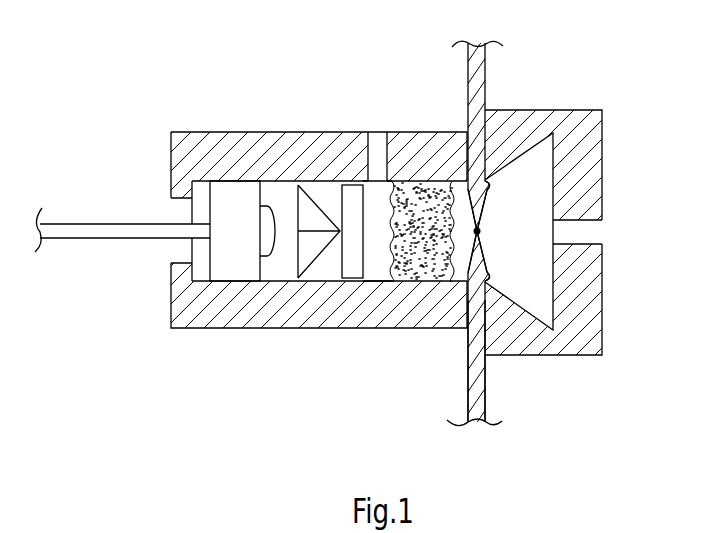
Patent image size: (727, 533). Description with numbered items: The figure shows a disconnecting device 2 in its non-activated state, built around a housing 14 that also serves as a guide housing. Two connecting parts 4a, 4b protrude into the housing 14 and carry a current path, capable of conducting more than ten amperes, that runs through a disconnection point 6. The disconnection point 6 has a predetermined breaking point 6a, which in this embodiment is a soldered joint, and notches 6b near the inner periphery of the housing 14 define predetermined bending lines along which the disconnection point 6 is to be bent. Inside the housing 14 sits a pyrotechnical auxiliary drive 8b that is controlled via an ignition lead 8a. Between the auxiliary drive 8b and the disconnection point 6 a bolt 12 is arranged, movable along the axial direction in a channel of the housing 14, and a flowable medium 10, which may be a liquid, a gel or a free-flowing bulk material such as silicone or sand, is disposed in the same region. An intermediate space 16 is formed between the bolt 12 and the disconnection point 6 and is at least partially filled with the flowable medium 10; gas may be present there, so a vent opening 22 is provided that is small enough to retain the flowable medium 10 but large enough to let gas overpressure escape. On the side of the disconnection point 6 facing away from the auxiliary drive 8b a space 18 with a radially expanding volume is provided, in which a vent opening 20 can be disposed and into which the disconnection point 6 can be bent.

The disconnecting device 2 is at (582, 75).
The connecting part 4a is at (468, 75).
The connecting part 4b is at (470, 387).
The disconnection point 6 is at (507, 183).
The predetermined breaking point 6a is at (480, 233).
The notches 6b is at (488, 188).
The ignition lead 8a is at (85, 228).
The pyrotechnical auxiliary drive 8b is at (238, 190).
The flowable medium 10 is at (424, 193).
The bolt 12 is at (353, 265).
The housing 14 is at (263, 313).
The intermediate space 16 is at (378, 258).
The space 18 is at (535, 182).
The vent opening 20 is at (590, 232).
The vent opening 22 is at (376, 145).